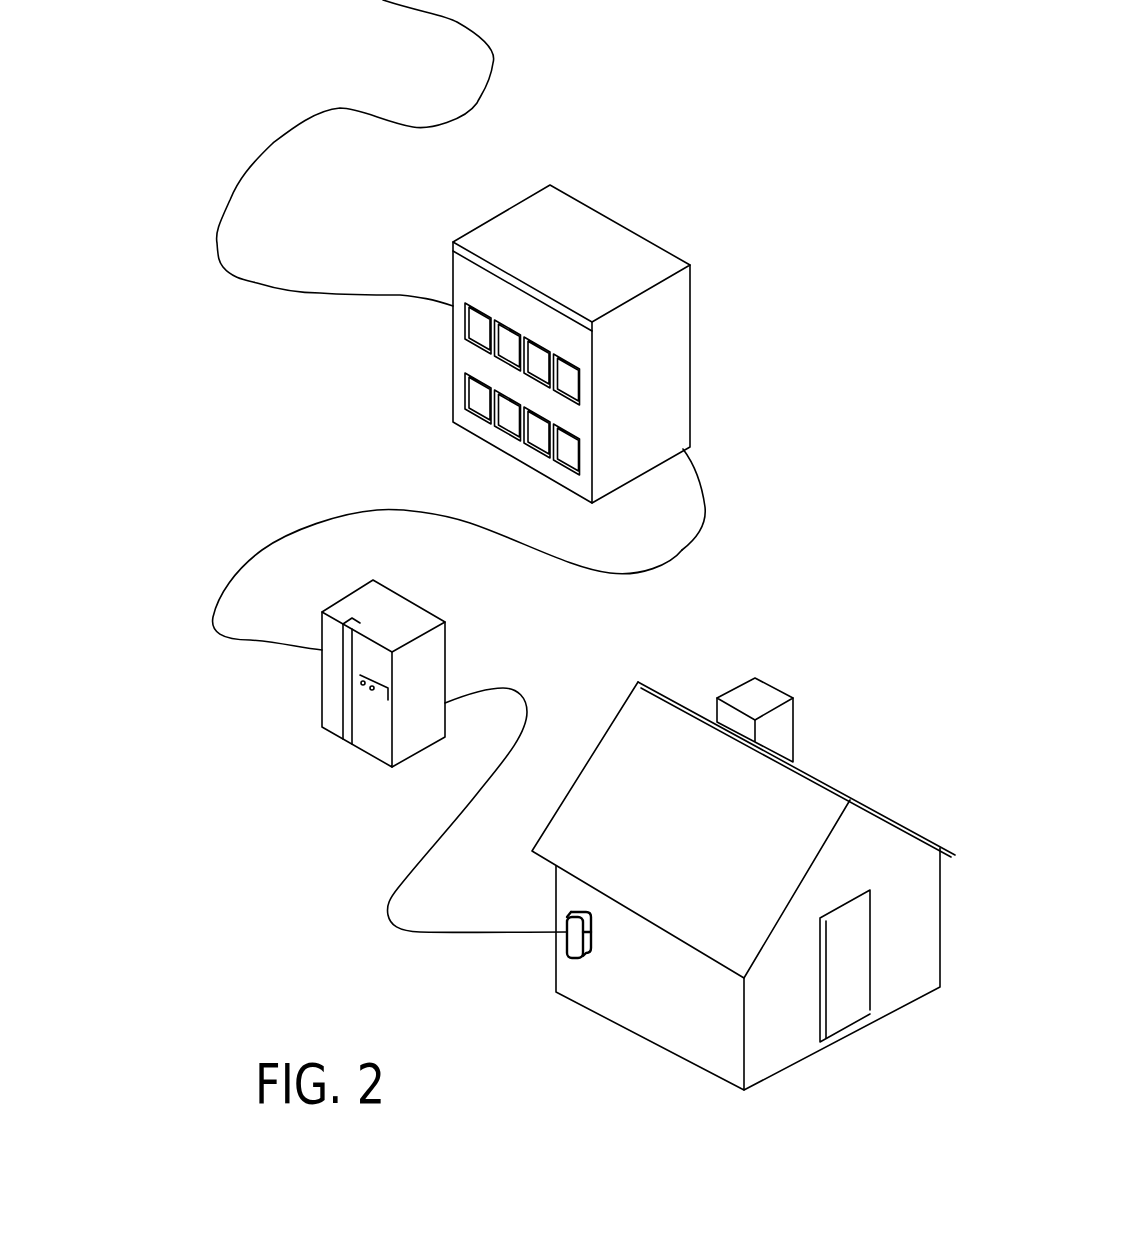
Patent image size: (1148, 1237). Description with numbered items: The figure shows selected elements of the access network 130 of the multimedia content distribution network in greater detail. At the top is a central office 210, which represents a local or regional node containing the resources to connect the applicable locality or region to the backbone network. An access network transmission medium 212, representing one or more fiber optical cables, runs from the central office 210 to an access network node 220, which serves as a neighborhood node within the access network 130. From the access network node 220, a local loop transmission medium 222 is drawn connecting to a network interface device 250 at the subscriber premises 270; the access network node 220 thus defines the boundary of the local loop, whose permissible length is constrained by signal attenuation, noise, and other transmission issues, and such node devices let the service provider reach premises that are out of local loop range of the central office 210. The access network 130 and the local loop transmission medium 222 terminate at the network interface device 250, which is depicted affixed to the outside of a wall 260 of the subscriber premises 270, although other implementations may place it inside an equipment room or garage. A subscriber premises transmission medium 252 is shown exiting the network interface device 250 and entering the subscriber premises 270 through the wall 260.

The access network 130 is at (893, 206).
The central office 210 is at (691, 288).
The access network transmission medium 212 is at (682, 550).
The access network node 220 is at (322, 699).
The local loop transmission medium 222 is at (390, 906).
The network interface device 250 is at (572, 956).
The subscriber premises transmission medium 252 is at (595, 946).
The wall 260 is at (725, 1050).
The subscriber premises 270 is at (743, 884).